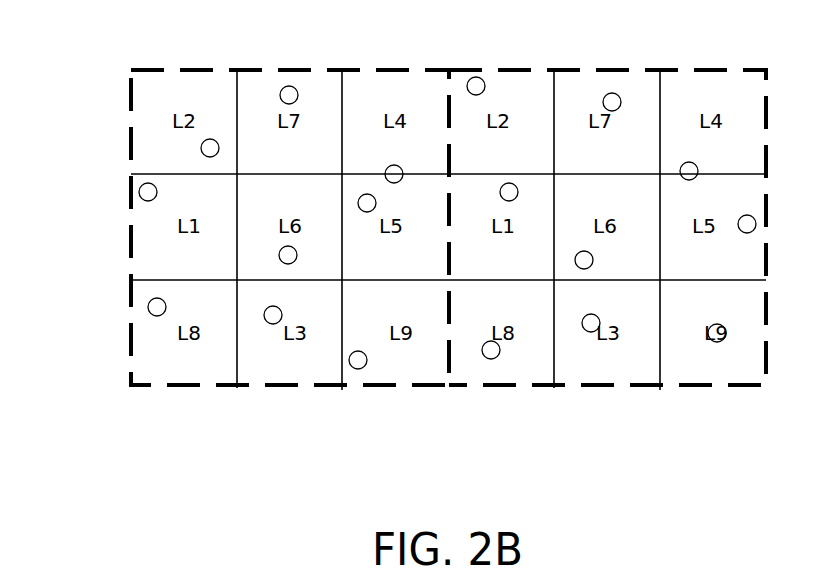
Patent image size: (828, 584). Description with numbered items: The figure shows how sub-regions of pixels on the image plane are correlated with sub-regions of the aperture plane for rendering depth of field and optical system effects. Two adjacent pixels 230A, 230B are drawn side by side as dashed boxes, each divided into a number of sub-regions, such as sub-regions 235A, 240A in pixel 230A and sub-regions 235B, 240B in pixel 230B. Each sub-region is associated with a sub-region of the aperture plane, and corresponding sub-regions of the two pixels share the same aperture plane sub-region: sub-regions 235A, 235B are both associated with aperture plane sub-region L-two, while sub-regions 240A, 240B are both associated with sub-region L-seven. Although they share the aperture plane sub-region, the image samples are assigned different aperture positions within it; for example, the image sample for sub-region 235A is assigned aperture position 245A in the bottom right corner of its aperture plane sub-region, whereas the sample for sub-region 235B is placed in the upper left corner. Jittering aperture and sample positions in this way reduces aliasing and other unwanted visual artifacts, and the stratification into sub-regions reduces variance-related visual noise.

The sub-region 235A is at (197, 100).
The sub-region 235B is at (534, 90).
The sub-region 240A is at (333, 100).
The sub-region 240B is at (646, 73).
The pixel 230A is at (340, 388).
The pixel 230B is at (658, 387).
The aperture position 245A is at (197, 148).